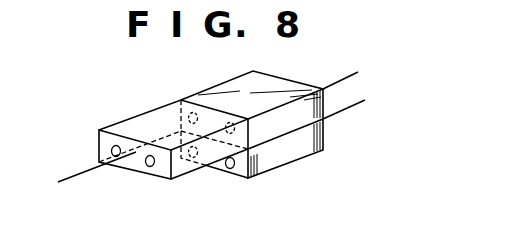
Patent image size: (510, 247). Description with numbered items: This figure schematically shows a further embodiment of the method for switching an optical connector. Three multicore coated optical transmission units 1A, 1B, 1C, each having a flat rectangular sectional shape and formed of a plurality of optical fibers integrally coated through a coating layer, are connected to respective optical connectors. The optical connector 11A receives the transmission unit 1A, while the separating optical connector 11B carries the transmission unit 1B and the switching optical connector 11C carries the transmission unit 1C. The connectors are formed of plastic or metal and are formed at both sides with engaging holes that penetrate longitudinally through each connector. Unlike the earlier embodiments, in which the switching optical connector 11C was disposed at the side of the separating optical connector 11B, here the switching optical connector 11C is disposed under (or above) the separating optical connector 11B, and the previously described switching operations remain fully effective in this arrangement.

The multicore coated optical transmission unit 1A is at (95, 170).
The multicore coated optical transmission unit 1B is at (327, 83).
The multicore coated optical transmission unit 1C is at (353, 106).
The optical connector 11A is at (164, 124).
The separating optical connector 11B is at (232, 92).
The switching optical connector 11C is at (293, 155).